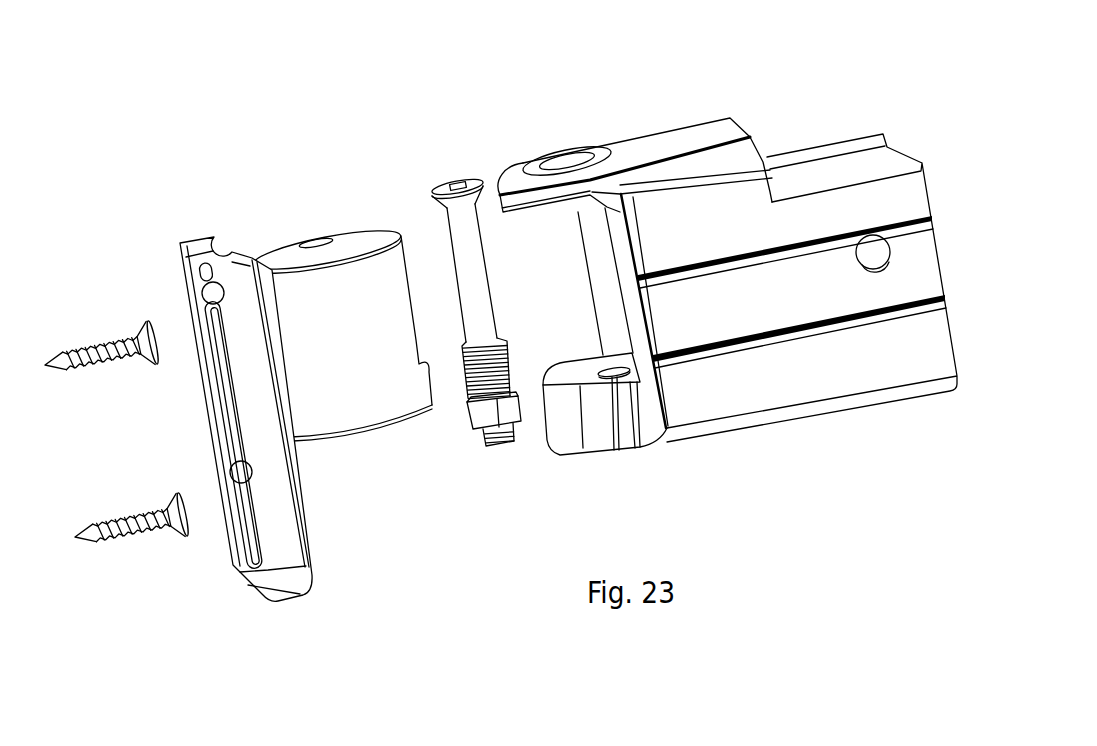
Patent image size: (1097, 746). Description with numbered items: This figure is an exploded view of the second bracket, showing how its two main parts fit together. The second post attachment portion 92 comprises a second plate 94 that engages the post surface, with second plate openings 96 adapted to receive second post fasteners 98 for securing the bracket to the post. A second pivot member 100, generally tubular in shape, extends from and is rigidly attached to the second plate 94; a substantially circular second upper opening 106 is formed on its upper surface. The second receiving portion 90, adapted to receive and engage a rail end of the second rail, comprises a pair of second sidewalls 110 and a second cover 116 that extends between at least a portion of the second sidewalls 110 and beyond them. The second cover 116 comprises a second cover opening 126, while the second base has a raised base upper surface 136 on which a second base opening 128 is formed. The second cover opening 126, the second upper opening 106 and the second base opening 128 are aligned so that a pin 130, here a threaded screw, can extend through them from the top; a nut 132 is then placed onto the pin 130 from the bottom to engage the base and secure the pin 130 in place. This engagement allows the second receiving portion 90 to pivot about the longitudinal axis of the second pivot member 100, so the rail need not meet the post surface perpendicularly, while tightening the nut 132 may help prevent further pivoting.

The second receiving portion 90 is at (783, 88).
The second post attachment portion 92 is at (203, 177).
The second plate 94 is at (287, 523).
The second plate openings 96 is at (210, 330).
The second post fasteners 98 is at (98, 343).
The second pivot member 100 is at (360, 397).
The second upper opening 106 is at (317, 240).
The second sidewalls 110 is at (797, 360).
The second cover 116 is at (658, 138).
The second cover opening 126 is at (580, 157).
The second base opening 128 is at (620, 373).
The pin 130 is at (462, 237).
The nut 132 is at (487, 417).
The base upper surface 136 is at (577, 377).